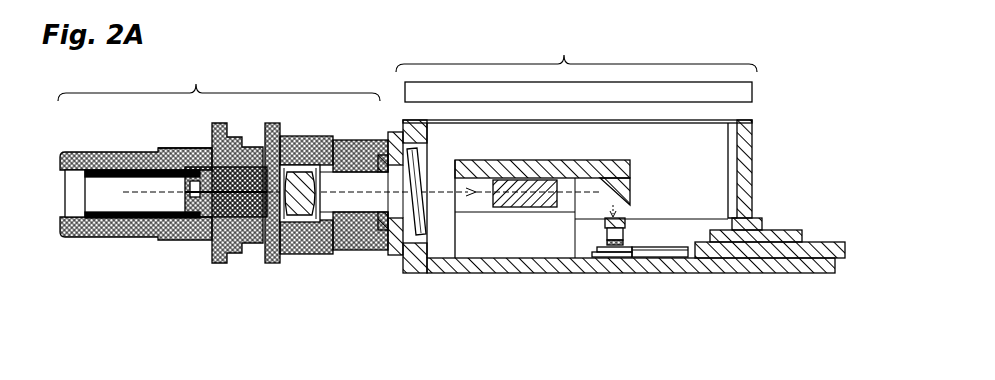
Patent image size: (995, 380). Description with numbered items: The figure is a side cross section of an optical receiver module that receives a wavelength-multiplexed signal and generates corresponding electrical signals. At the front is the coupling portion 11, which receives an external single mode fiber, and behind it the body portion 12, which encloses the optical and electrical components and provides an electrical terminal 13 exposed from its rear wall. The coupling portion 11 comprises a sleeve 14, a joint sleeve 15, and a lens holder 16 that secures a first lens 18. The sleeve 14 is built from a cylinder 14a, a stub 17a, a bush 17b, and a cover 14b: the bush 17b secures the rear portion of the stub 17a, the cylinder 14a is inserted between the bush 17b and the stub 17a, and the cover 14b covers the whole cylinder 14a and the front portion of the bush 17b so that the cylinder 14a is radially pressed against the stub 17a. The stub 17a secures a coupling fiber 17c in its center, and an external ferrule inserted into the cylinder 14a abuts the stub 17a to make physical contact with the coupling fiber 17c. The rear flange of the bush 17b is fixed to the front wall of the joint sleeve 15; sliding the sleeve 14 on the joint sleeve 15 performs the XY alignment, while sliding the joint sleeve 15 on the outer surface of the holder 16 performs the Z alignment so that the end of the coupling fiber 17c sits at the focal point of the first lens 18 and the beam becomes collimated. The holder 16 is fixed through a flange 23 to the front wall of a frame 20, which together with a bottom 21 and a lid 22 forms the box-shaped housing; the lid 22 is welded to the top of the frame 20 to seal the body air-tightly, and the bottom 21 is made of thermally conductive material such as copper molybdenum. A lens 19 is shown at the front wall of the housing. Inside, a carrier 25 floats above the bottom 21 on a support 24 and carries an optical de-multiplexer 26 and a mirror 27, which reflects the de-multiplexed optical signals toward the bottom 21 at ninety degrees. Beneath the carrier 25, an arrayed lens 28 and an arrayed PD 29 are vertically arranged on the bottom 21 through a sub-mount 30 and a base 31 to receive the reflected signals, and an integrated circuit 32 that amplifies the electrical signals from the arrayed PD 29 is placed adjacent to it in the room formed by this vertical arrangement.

The coupling portion 11 is at (207, 78).
The body portion 12 is at (575, 48).
The electrical terminal 13 is at (787, 230).
The sleeve 14 is at (147, 233).
The cylinder 14a is at (107, 152).
The cover 14b is at (160, 150).
The joint sleeve 15 is at (293, 253).
The lens holder 16 is at (348, 243).
The stub 17a is at (203, 230).
The bush 17b is at (255, 232).
The coupling fiber 17c is at (170, 222).
The first lens 18 is at (300, 170).
The receptacle lens 19 is at (413, 170).
The frame 20 is at (752, 150).
The bottom 21 is at (520, 260).
The lid 22 is at (745, 92).
The flange 23 is at (393, 258).
The support 24 is at (468, 242).
The carrier 25 is at (600, 160).
The optical de-multiplexer 26 is at (510, 213).
The mirror 27 is at (635, 190).
The arrayed lens 28 is at (607, 218).
The arrayed PD 29 is at (598, 242).
The sub-mount 30 is at (597, 260).
The base 31 is at (662, 258).
The integrated circuit 32 is at (663, 248).